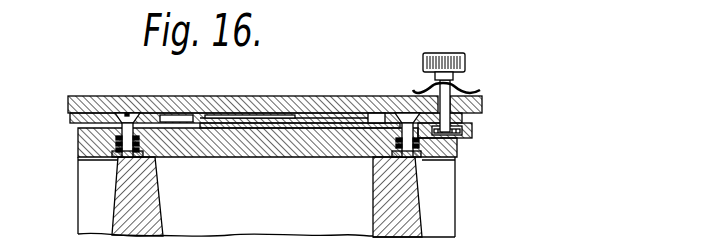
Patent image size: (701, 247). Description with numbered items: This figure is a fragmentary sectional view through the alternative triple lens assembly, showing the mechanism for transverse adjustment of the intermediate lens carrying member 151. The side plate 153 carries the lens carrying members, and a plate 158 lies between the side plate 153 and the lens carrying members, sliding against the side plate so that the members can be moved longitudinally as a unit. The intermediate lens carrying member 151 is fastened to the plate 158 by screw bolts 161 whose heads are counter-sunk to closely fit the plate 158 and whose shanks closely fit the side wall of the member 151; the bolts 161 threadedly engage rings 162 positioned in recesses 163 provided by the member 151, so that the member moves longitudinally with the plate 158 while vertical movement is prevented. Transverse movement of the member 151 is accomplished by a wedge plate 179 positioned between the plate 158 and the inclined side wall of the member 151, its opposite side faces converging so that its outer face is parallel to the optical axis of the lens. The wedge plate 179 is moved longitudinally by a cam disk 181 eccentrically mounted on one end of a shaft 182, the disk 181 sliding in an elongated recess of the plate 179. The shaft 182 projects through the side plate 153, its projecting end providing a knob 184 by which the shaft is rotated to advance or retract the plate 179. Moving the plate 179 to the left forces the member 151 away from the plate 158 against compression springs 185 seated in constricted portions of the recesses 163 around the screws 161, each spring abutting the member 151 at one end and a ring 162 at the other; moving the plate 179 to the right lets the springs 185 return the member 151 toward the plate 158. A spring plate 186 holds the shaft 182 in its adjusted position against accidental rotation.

The intermediate lens carrying member 151 is at (330, 138).
The side plate 153 is at (313, 96).
The plate 158 is at (153, 113).
The screw bolts 161 is at (79, 141).
The rings 162 is at (115, 160).
The recesses 163 is at (158, 157).
The wedge plate 179 is at (358, 122).
The cam disk 181 is at (472, 128).
The shaft 182 is at (466, 89).
The knob 184 is at (456, 55).
The compression springs 185 is at (125, 143).
The spring plate 186 is at (458, 84).